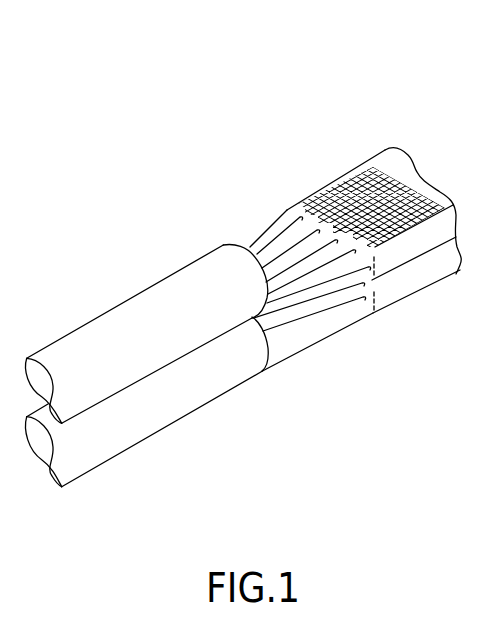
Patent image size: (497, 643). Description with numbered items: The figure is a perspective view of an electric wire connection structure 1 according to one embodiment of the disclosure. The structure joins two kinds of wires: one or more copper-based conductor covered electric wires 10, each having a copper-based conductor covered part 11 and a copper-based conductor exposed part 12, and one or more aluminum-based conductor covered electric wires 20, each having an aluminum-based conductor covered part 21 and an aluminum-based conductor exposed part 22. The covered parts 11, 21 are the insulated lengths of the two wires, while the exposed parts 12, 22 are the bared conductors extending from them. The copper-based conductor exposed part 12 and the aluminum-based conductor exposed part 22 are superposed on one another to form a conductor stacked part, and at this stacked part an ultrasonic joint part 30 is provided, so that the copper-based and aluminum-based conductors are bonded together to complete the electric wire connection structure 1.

The electric wire connection structure 1 is at (282, 84).
The copper-based conductor covered electric wire 10 is at (190, 501).
The copper-based conductor covered part 11 is at (173, 403).
The copper-based conductor exposed part 12 is at (320, 323).
The aluminum-based conductor covered electric wire 20 is at (55, 260).
The aluminum-based conductor covered part 21 is at (100, 333).
The aluminum-based conductor exposed part 22 is at (278, 243).
The ultrasonic joint part 30 is at (370, 175).